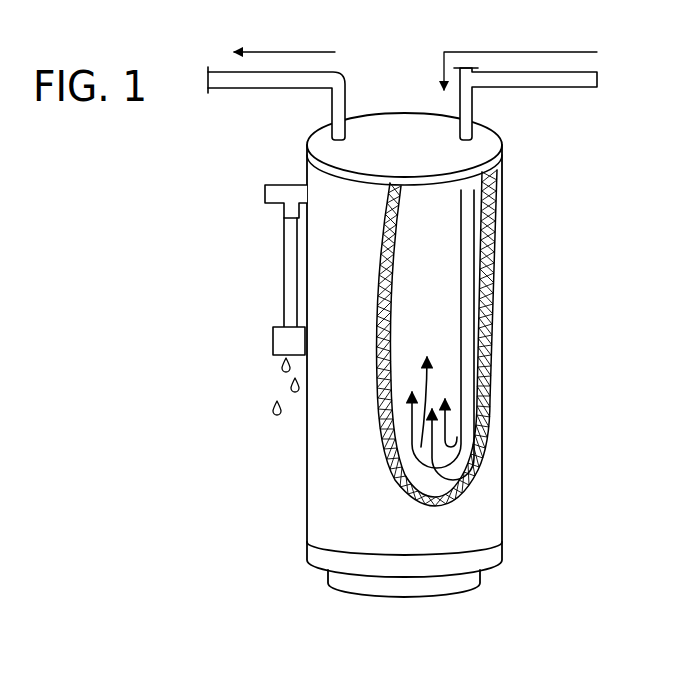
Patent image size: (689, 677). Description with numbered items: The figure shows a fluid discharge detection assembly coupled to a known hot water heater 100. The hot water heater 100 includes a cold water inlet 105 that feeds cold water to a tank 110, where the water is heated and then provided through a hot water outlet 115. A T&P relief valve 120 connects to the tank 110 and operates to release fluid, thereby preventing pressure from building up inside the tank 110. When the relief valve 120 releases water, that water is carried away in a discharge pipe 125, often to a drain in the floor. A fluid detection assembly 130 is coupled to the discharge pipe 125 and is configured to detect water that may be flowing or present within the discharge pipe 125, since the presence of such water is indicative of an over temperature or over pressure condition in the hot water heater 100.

The hot water heater 100 is at (577, 275).
The cold water inlet 105 is at (585, 84).
The tank 110 is at (470, 422).
The hot water outlet 115 is at (237, 84).
The T&P relief valve 120 is at (266, 195).
The discharge pipe 125 is at (284, 268).
The fluid detection assembly 130 is at (280, 340).